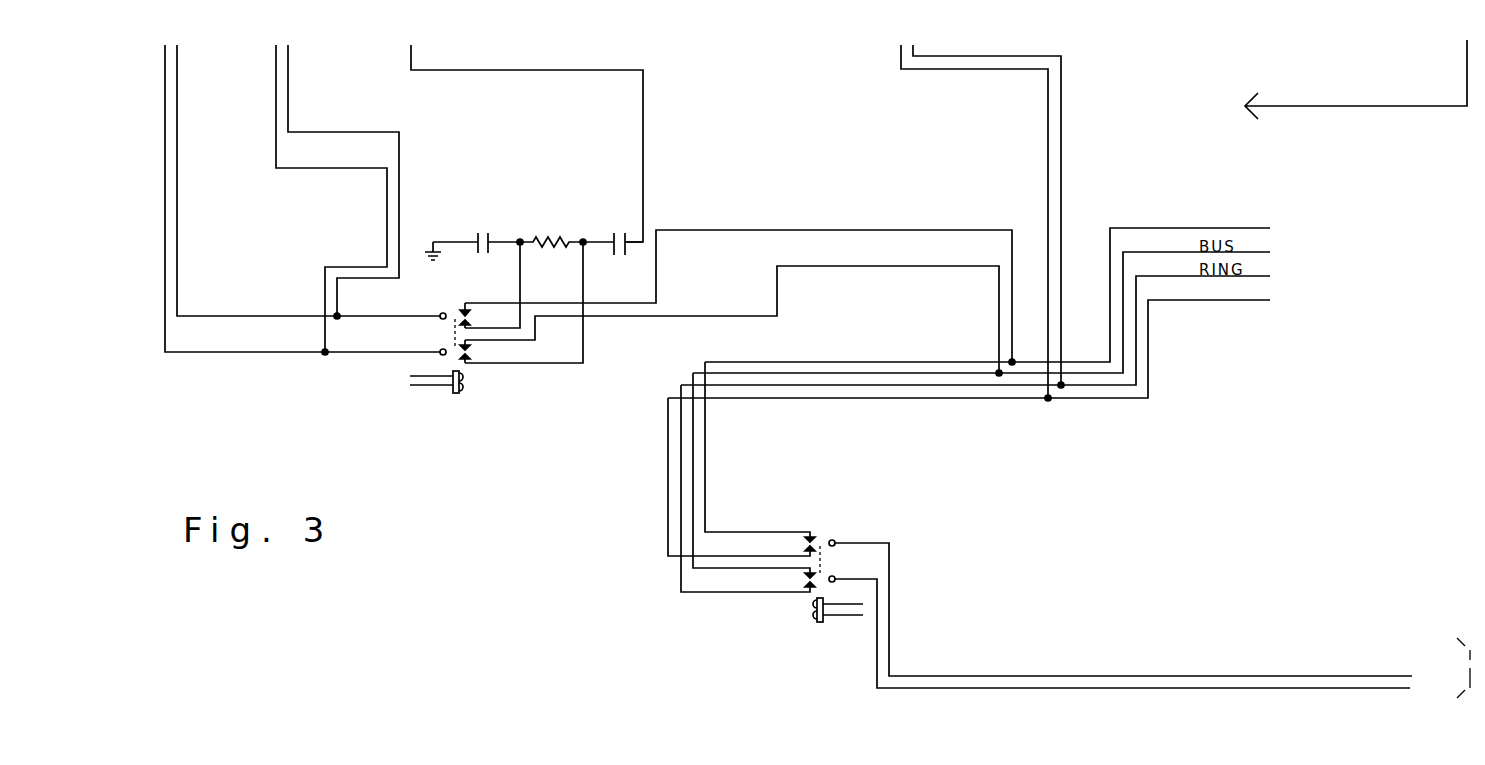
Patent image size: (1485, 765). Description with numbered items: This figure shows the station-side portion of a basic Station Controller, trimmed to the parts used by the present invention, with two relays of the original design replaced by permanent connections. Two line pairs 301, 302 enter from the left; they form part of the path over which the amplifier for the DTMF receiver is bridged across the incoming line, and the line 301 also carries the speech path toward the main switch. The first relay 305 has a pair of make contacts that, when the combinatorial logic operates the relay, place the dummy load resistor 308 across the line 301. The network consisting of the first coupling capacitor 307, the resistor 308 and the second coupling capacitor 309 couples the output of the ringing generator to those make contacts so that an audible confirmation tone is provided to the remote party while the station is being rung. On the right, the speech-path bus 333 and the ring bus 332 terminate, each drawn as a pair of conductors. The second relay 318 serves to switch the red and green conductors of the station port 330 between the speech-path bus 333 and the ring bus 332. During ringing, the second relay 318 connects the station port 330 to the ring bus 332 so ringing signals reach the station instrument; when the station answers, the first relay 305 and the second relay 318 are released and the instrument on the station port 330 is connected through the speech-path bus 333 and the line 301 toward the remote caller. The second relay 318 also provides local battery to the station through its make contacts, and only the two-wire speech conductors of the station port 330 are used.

The line 301 is at (186, 88).
The path 302 is at (299, 80).
The relay K3 305 is at (413, 345).
The capacitor C1 307 is at (495, 207).
The resistor R2 308 is at (559, 207).
The capacitor C2 309 is at (618, 207).
The relay K6 318 is at (854, 526).
The station port SP1 330 is at (1420, 633).
The Ring Bus 332 is at (1174, 308).
The SP Bus 333 is at (1173, 222).